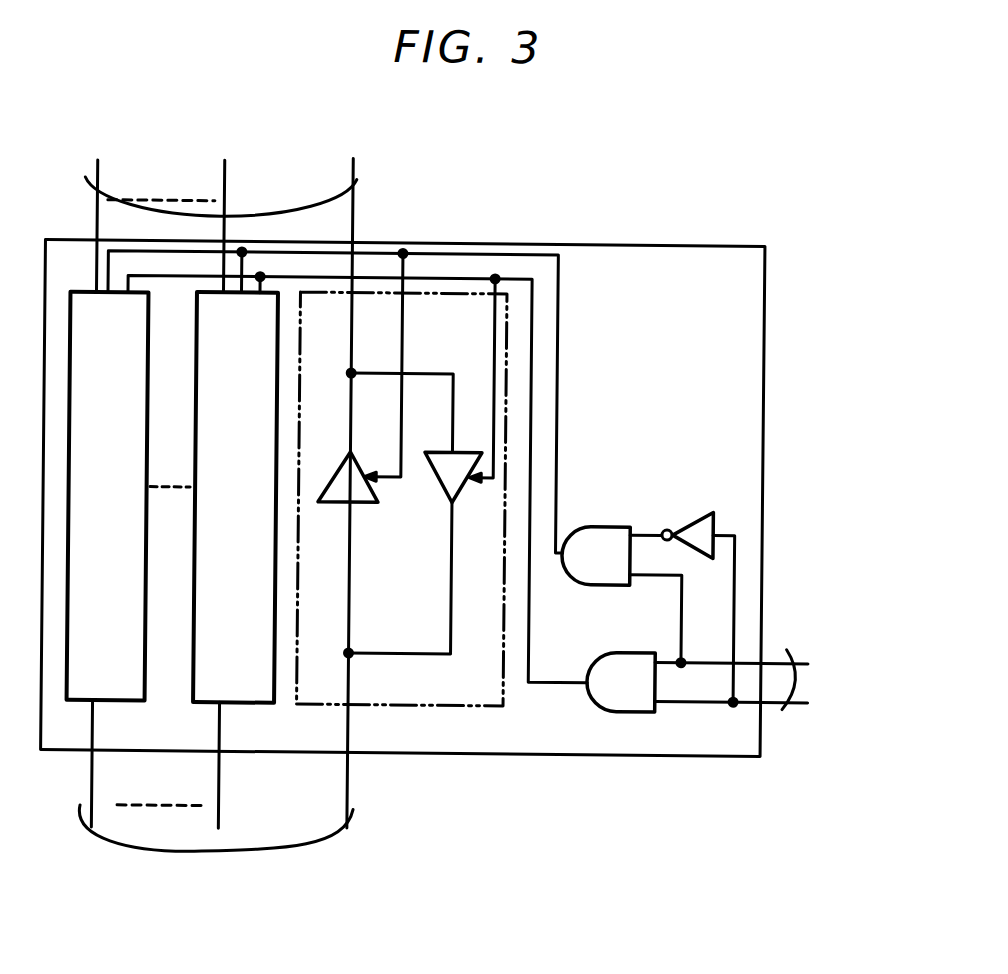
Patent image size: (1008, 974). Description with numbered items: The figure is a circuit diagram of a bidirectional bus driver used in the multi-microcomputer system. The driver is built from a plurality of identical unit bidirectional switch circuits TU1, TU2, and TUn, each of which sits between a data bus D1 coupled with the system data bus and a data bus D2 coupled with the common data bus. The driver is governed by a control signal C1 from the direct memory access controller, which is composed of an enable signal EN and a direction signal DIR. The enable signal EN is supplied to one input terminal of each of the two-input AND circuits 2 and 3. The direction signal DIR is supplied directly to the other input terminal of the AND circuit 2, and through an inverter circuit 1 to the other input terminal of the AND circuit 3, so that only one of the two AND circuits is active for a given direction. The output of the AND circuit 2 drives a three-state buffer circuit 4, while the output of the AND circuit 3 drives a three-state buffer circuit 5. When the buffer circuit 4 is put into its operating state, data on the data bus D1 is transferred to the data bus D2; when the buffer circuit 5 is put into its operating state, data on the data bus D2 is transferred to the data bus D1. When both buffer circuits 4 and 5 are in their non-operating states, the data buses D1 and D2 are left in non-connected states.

The inverter circuit 1 is at (693, 515).
The 2-input AND circuit 2 is at (610, 710).
The 2-input AND circuit 3 is at (595, 525).
The 3-state buffer circuit 4 is at (462, 448).
The 3-state buffer circuit 5 is at (378, 494).
The unit bidirectional switch circuit TU1 is at (452, 705).
The unit bidirectional switch circuit TU2 is at (259, 705).
The unit bidirectional switch circuit TUn is at (129, 705).
The data bus D1 is at (356, 192).
The data bus D2 is at (358, 818).
The enable signal EN is at (752, 667).
The direction signal DIR is at (757, 703).
The control signal C1 is at (795, 711).